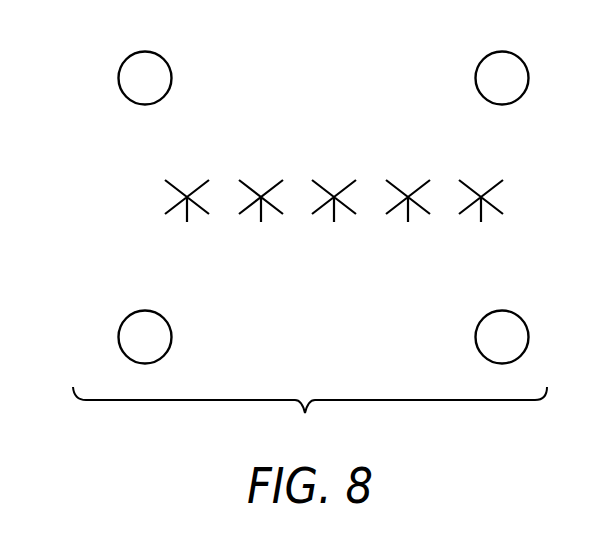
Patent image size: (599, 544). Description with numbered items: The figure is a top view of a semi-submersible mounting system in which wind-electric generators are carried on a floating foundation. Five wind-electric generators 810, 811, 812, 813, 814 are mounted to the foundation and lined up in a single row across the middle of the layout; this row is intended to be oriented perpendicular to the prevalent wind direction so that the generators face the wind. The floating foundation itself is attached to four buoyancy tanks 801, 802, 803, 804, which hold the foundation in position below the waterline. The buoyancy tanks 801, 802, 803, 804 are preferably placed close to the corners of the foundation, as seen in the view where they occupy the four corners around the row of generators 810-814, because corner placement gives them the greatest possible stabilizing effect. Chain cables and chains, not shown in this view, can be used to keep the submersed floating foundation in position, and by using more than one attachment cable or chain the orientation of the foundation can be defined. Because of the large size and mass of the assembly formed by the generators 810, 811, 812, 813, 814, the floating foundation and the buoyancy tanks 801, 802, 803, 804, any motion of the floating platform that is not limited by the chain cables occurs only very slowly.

The buoyancy tank 801 is at (119, 77).
The buoyancy tank 802 is at (476, 77).
The buoyancy tank 803 is at (119, 336).
The buoyancy tank 804 is at (476, 336).
The wind-electric generator 810 is at (185, 219).
The wind-electric generator 811 is at (259, 219).
The wind-electric generator 812 is at (332, 219).
The wind-electric generator 813 is at (406, 219).
The wind-electric generator 814 is at (479, 219).